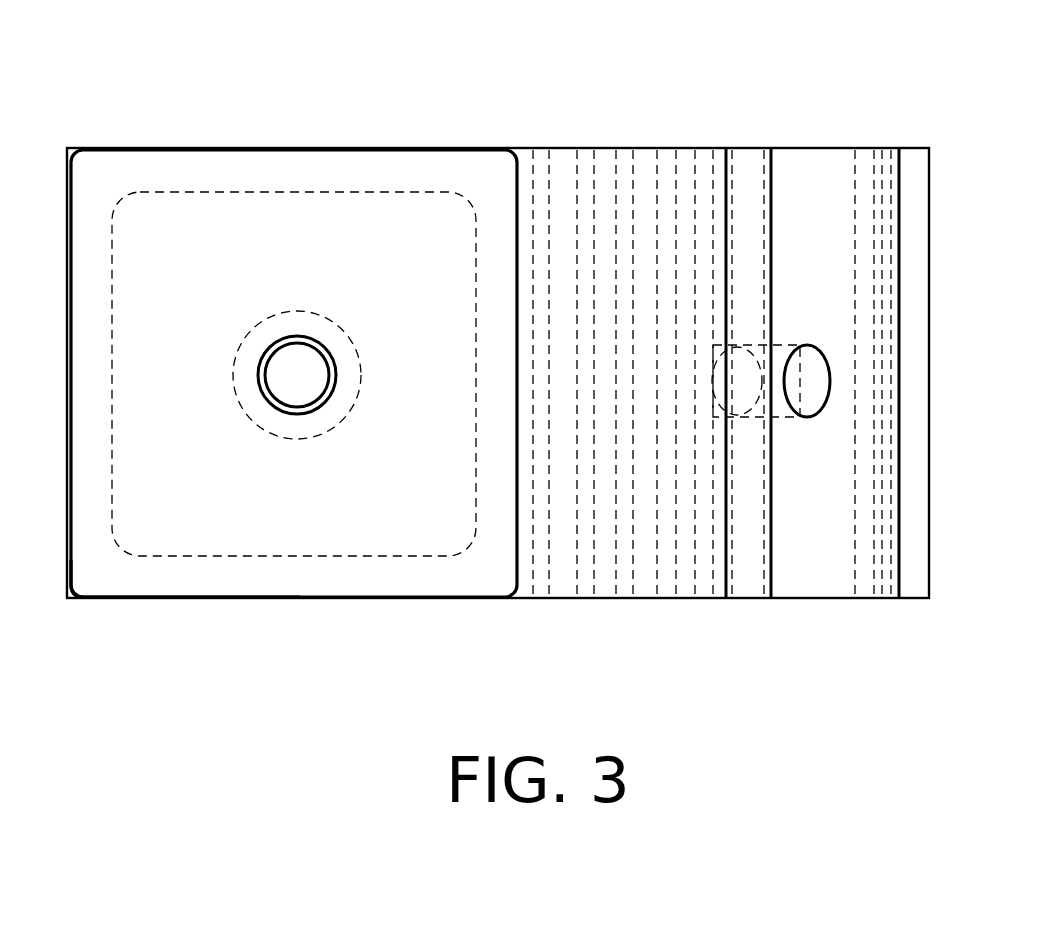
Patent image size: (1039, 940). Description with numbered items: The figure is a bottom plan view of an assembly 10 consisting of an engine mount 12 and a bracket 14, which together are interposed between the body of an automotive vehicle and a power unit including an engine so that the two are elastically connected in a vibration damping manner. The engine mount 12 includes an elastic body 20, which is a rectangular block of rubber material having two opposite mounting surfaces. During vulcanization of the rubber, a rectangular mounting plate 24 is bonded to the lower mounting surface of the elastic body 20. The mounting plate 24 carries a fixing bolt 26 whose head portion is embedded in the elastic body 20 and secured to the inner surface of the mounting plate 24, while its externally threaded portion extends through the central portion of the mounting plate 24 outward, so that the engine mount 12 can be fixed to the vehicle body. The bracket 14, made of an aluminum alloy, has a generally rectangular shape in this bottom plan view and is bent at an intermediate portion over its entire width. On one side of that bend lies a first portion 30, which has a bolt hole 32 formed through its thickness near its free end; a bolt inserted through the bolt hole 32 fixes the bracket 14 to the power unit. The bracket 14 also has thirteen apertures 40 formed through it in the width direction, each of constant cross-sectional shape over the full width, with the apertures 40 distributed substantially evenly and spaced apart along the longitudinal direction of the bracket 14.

The assembly 10 is at (627, 88).
The engine mount 12 is at (531, 577).
The bracket 14 is at (714, 138).
The elastic body 20 is at (340, 520).
The mounting plate 24 is at (164, 580).
The fixing bolt 26 is at (292, 355).
The first portion 30 is at (807, 570).
The bolt hole 32 is at (828, 368).
The apertures 40 is at (535, 190).